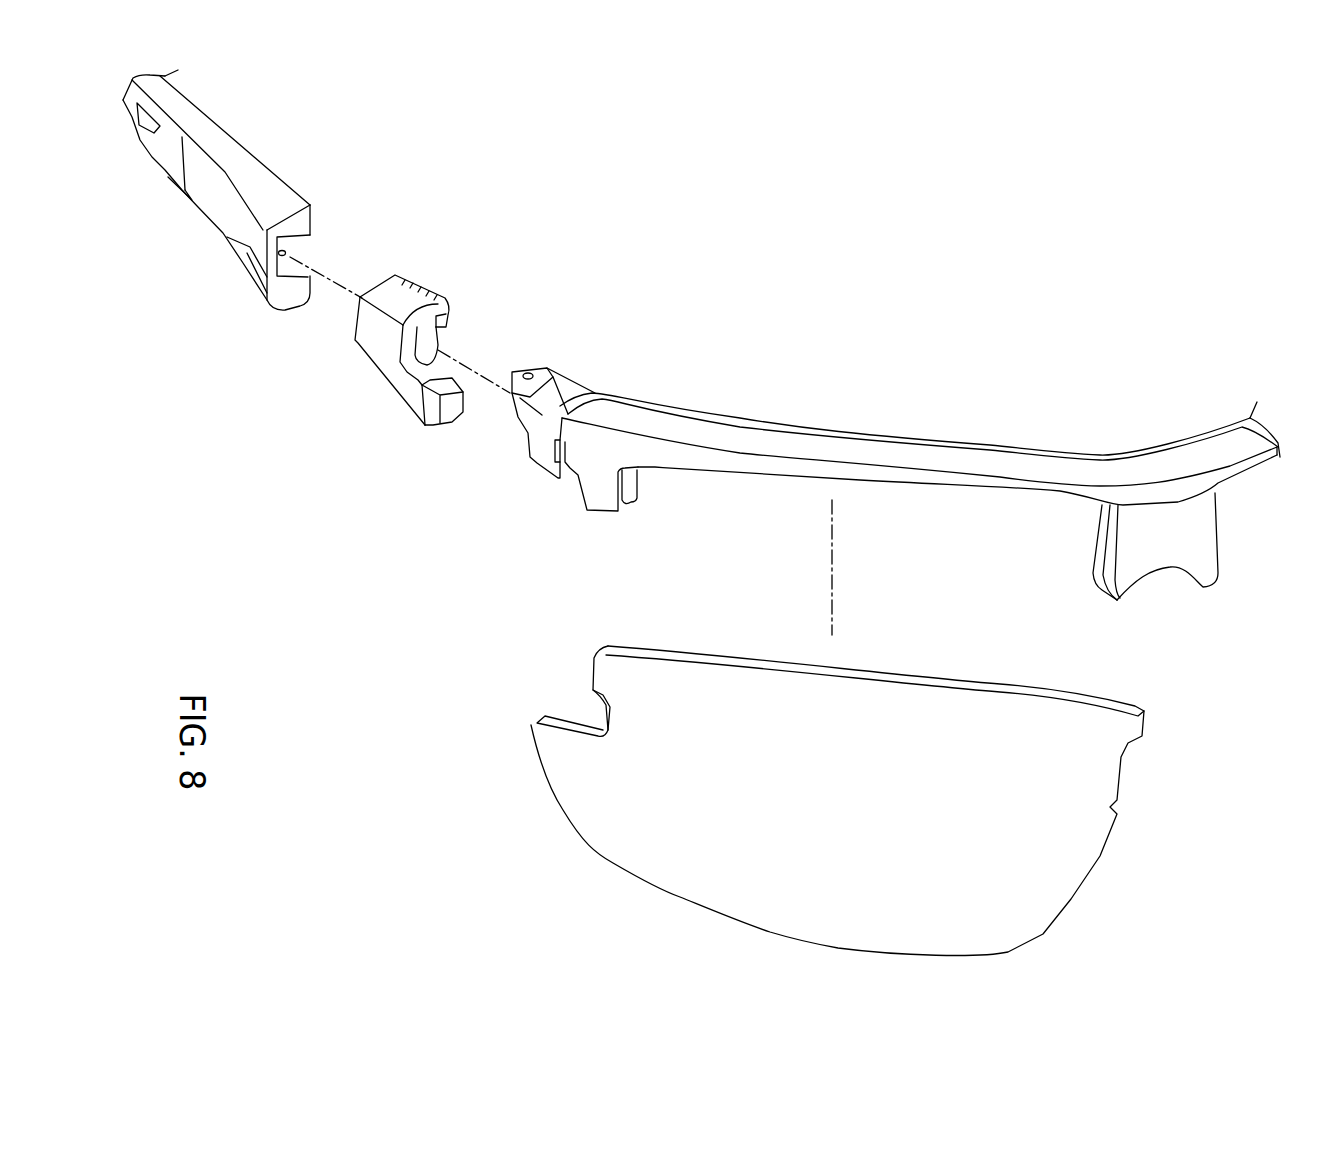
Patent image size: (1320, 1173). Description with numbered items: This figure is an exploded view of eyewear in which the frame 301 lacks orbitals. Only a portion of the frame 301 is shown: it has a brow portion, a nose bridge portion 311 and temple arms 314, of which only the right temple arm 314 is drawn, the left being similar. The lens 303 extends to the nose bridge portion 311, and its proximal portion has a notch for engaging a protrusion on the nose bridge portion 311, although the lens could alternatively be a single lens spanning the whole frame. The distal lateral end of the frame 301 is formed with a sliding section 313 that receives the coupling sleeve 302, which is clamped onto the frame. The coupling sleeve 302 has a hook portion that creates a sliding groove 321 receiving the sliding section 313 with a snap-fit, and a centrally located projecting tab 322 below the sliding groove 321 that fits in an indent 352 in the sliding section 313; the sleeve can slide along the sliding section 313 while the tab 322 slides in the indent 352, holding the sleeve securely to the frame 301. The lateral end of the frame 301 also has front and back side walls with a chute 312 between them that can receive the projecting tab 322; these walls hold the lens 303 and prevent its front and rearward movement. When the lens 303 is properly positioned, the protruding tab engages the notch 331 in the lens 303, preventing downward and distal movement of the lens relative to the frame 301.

The frame 301 is at (890, 486).
The coupling sleeve 302 is at (383, 401).
The lens 303 is at (766, 818).
The nose bridge portion 311 is at (1172, 560).
The chute 312 is at (628, 482).
The sliding section 313 is at (560, 390).
The temple arm 314 is at (257, 195).
The sliding groove 321 is at (436, 336).
The projecting tab 322 is at (447, 412).
The notch 331 is at (597, 715).
The indent 352 is at (570, 482).